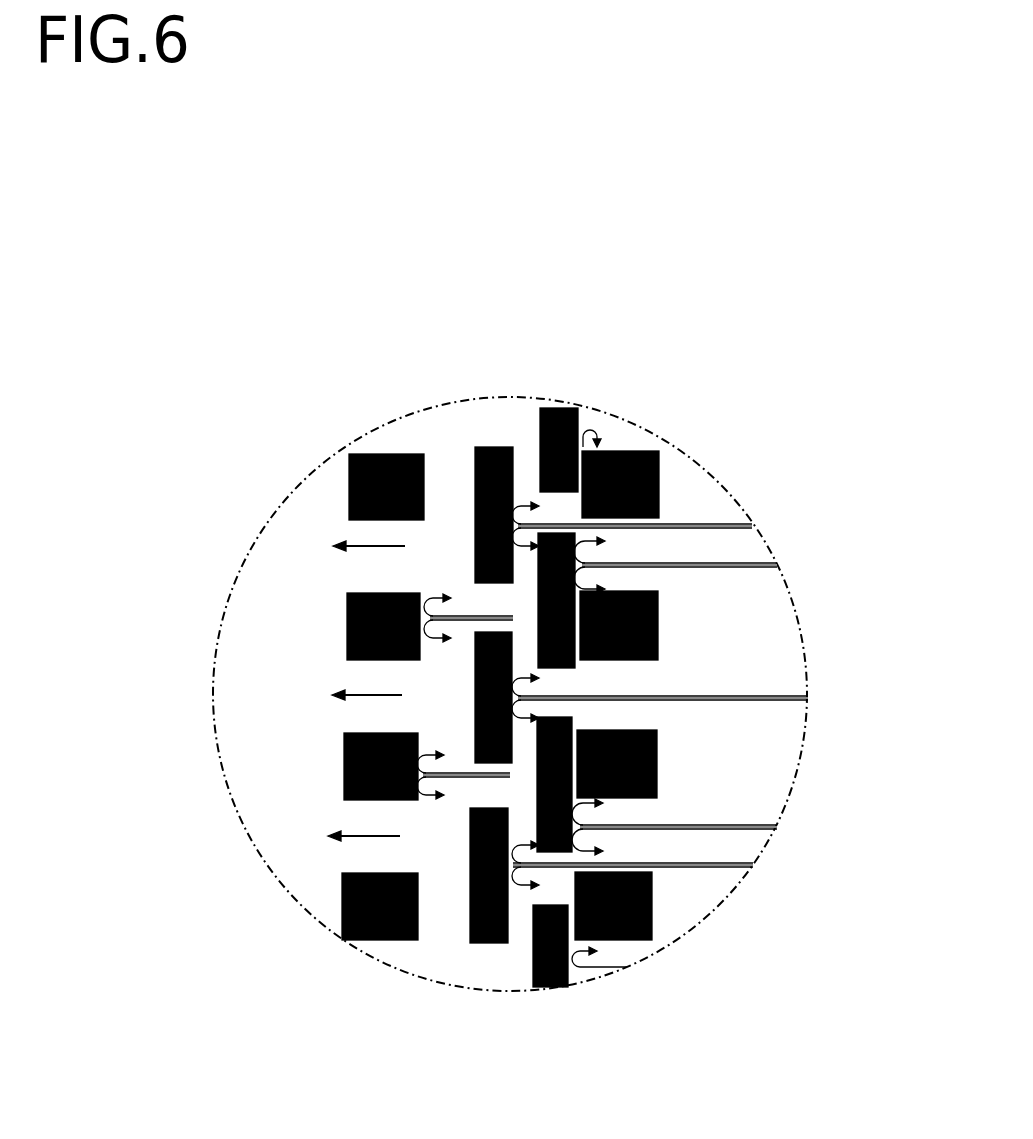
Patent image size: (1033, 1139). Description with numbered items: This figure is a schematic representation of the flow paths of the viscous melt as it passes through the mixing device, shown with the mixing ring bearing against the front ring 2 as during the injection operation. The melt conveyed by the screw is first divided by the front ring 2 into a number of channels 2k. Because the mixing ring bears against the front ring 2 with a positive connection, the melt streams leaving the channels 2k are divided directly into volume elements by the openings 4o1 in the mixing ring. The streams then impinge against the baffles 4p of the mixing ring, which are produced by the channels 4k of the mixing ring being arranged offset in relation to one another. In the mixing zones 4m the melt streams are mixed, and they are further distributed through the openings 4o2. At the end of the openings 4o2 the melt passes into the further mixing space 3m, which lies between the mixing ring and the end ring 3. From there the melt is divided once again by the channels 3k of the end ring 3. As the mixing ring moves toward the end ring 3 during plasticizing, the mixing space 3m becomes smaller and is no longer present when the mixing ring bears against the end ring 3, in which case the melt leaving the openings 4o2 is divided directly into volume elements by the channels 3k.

The end ring 3 is at (349, 482).
The mixing zone 4m is at (523, 572).
The opening 4o2 is at (488, 789).
The channel in the end ring 3k is at (381, 862).
The mixing space 3m is at (423, 897).
The channel in the mixing ring 4k is at (488, 791).
The baffle 4p is at (580, 468).
The front ring 2 is at (658, 623).
The opening 4o1 is at (547, 705).
The channel in the front ring 2k is at (613, 813).